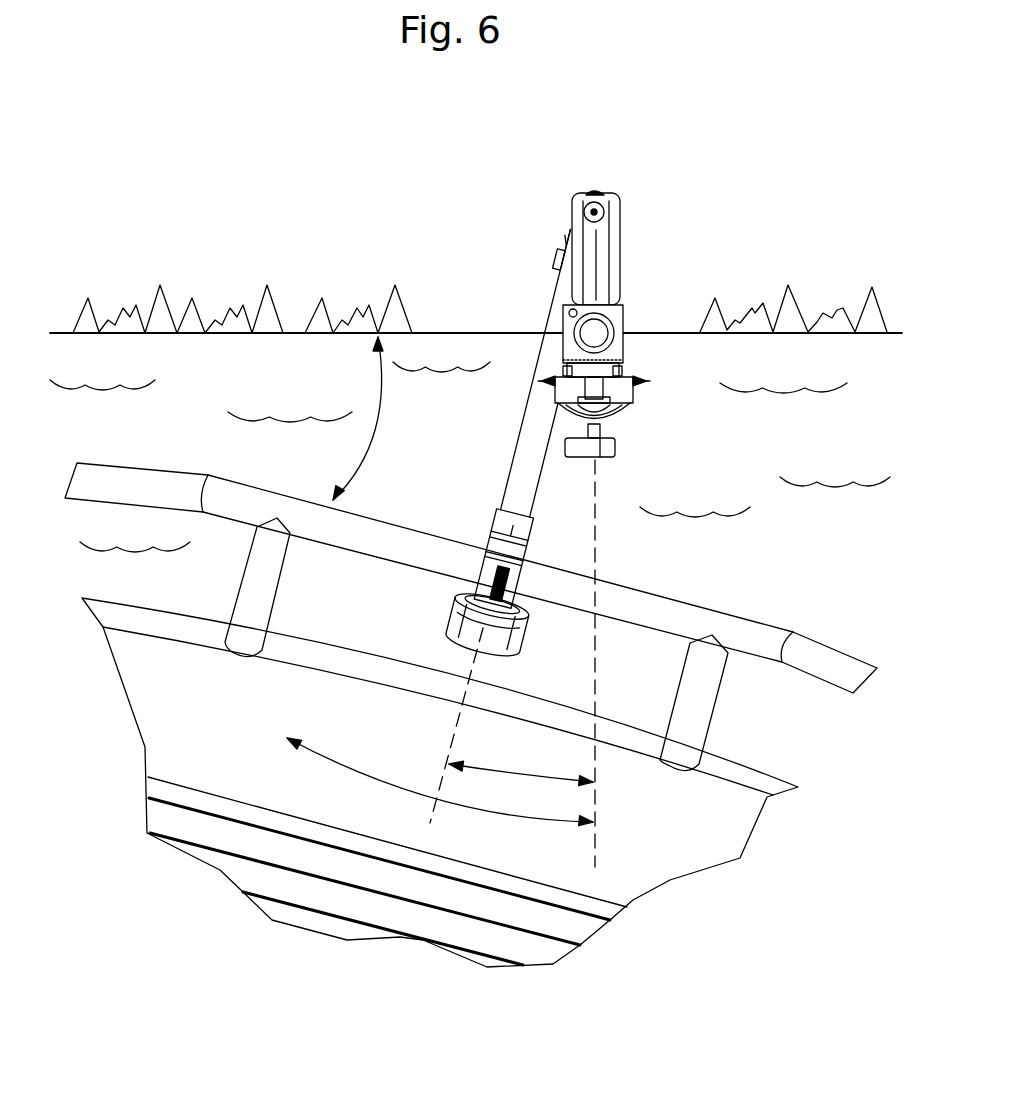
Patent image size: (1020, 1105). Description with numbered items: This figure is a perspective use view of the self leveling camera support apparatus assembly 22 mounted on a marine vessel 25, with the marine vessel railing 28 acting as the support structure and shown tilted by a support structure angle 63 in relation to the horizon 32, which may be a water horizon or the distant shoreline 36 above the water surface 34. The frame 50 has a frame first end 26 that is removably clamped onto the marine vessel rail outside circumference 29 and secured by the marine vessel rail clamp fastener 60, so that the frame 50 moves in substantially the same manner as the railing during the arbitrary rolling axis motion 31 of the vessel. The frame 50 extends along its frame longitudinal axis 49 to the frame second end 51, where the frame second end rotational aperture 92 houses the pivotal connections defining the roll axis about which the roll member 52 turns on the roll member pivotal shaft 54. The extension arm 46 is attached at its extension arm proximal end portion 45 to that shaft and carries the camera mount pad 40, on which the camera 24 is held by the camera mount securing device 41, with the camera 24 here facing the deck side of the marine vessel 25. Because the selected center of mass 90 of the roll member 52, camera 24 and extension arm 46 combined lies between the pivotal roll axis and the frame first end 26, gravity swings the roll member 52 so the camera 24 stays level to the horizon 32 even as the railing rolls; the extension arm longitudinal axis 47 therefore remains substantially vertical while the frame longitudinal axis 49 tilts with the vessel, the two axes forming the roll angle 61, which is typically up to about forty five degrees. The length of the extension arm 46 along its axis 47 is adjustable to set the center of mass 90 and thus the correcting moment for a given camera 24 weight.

The self leveling camera support apparatus assembly 22 is at (692, 215).
The camera 24 is at (620, 343).
The marine vessel 25 is at (678, 807).
The frame first end 26 is at (500, 530).
The support structure in the form of a marine vessel railing 28 is at (653, 610).
The marine vessel rail outside circumference 29 is at (763, 622).
The rolling axis motion of support structure or frame arbitrary pivotal roll movemen 31 is at (370, 778).
The horizon 32 is at (289, 329).
The water surface 34 is at (251, 420).
The shoreline 36 is at (230, 297).
The camera mount pad 40 is at (627, 363).
The camera mount securing device 41 is at (617, 453).
The extension arm proximal end portion 45 is at (588, 193).
The extension arm 46 is at (610, 255).
The extension arm longitudinal axis 47 is at (598, 548).
The frame longitudinal axis 49 is at (455, 727).
The frame 50 is at (525, 430).
The frame second end 51 is at (565, 250).
The roll member 52 is at (637, 387).
The roll member pivotal shaft 54 is at (598, 193).
The marine vessel rail clamp fastener 60 is at (497, 640).
The roll angle between frame longitudinal axis and extension arm longitudinal axis 61 is at (525, 778).
The support structure angle in relation to horizon 63 is at (378, 418).
The selected center of mass position of roll member, camera, and extension arm combi 90 is at (598, 298).
The frame second end rotational aperture 92 is at (566, 278).